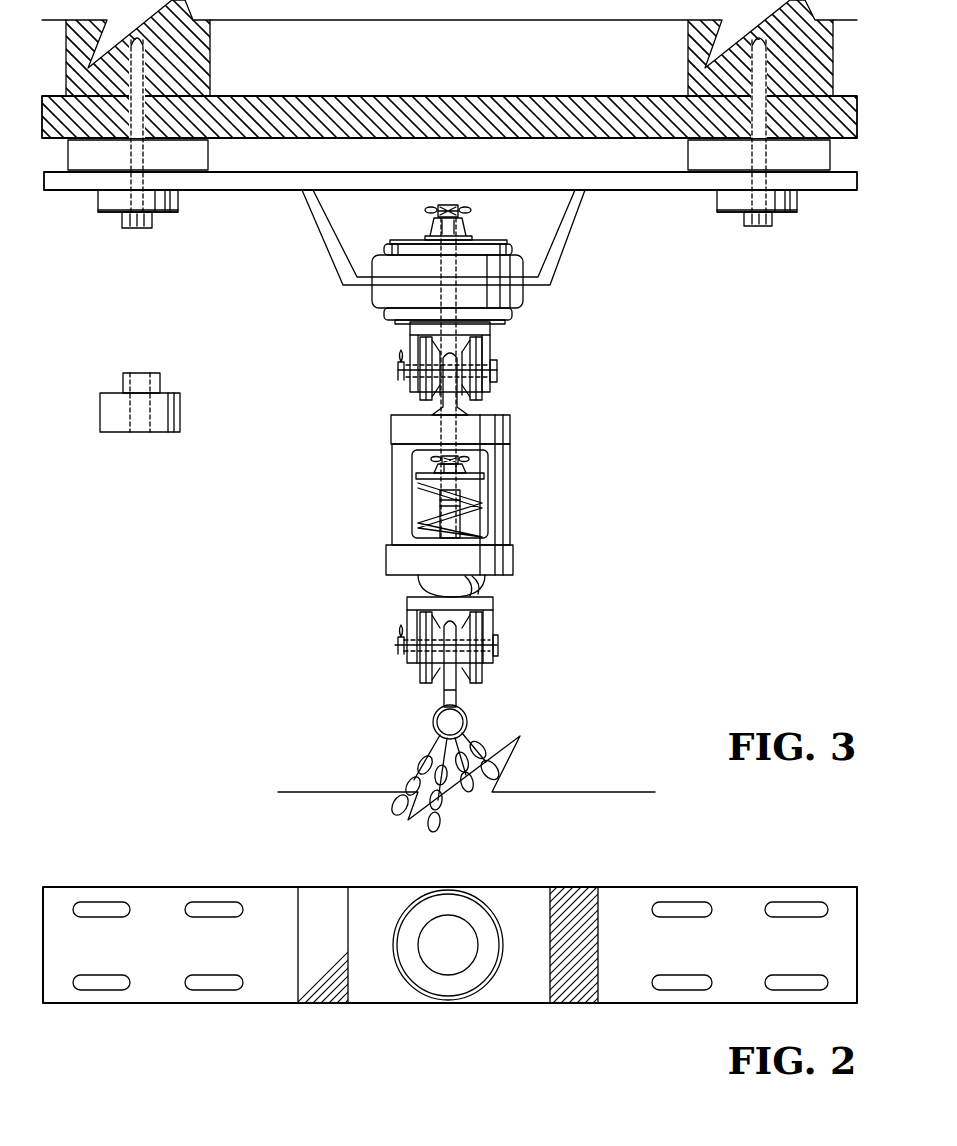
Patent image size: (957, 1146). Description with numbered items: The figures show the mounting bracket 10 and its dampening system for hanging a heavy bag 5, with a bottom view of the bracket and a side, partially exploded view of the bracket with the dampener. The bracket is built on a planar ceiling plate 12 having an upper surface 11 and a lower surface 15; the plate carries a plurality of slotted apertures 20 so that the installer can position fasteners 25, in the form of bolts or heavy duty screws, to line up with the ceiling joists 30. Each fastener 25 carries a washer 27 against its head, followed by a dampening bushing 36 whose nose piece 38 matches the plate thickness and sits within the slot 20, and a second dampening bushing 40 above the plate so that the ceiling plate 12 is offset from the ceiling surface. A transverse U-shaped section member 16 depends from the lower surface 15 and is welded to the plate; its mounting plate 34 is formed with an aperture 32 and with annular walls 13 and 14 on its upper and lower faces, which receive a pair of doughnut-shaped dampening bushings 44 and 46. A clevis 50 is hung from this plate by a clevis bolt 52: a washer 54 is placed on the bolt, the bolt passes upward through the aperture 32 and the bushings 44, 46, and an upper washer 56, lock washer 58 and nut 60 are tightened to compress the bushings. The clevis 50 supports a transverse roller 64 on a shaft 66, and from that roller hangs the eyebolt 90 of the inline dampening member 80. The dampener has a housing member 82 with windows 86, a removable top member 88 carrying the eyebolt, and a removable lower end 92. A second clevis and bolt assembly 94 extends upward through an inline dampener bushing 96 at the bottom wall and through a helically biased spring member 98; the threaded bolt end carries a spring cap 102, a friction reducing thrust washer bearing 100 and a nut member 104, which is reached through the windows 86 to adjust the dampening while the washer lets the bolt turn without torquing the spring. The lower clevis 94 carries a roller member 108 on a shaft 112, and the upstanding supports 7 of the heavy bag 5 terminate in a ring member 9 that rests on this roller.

In FIG. 3, the heavy bag 5 is at (345, 792).
In FIG. 3, the upstanding supports 7 is at (418, 745).
In FIG. 3, the ring member 9 is at (444, 697).
In FIG. 2, the mounting bracket 10 is at (142, 832).
In FIG. 3, the upper surface 11 is at (590, 172).
In FIG. 3, the planar ceiling plate 12 is at (348, 172).
In FIG. 2, the planar ceiling plate 12 is at (735, 905).
In FIG. 3, the annular wall 13 is at (522, 254).
In FIG. 3, the annular wall 14 is at (523, 302).
In FIG. 2, the annular wall 14 is at (487, 980).
In FIG. 3, the lower surface 15 is at (665, 192).
In FIG. 3, the transverse U-shaped section member 16 is at (332, 252).
In FIG. 2, the transverse U-shaped section member 16 is at (363, 990).
In FIG. 2, the slotted apertures 20 is at (78, 907).
In FIG. 3, the fasteners 25 is at (139, 230).
In FIG. 3, the washer 27 is at (107, 214).
In FIG. 3, the ceiling joists 30 is at (218, 52).
In FIG. 2, the aperture 32 is at (448, 958).
In FIG. 3, the mounting plate 34 is at (358, 282).
In FIG. 3, the dampening bushing 36 is at (180, 201).
In FIG. 3, the nose piece 38 is at (162, 381).
In FIG. 3, the second dampening bushing 40 is at (210, 156).
In FIG. 3, the doughnut-shaped dampening bushing 44 is at (386, 248).
In FIG. 3, the doughnut-shaped dampening bushing 46 is at (386, 318).
In FIG. 3, the clevis 50 is at (487, 347).
In FIG. 3, the clevis bolt 52 is at (450, 204).
In FIG. 3, the washer 54 is at (395, 326).
In FIG. 3, the upper washer 56 is at (404, 238).
In FIG. 3, the lock washer 58 is at (466, 237).
In FIG. 3, the nut 60 is at (432, 222).
In FIG. 3, the transverse roller 64 is at (426, 394).
In FIG. 3, the shaft 66 is at (500, 371).
In FIG. 3, the inline dampening member 80 is at (476, 505).
In FIG. 3, the housing member 82 is at (400, 471).
In FIG. 3, the windows 86 is at (416, 497).
In FIG. 3, the removable top member 88 is at (400, 425).
In FIG. 3, the eyebolt 90 is at (455, 398).
In FIG. 3, the lower end 92 is at (513, 555).
In FIG. 3, the second clevis and bolt assembly 94 is at (490, 613).
In FIG. 3, the inline dampener bushing 96 is at (418, 582).
In FIG. 3, the helically biased spring member 98 is at (438, 521).
In FIG. 3, the friction reducing thrust washer bearing 100 is at (467, 468).
In FIG. 3, the spring cap 102 is at (482, 477).
In FIG. 3, the nut member 104 is at (460, 462).
In FIG. 3, the roller member 108 is at (485, 681).
In FIG. 3, the lower pin 112 is at (498, 643).